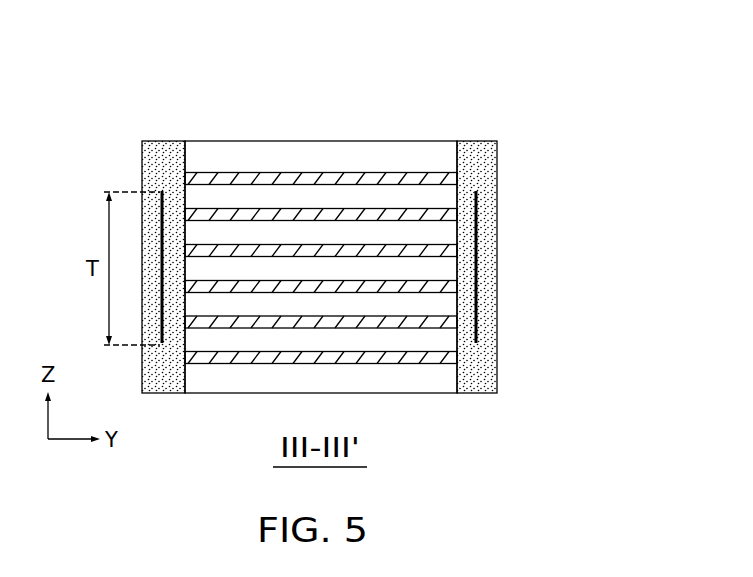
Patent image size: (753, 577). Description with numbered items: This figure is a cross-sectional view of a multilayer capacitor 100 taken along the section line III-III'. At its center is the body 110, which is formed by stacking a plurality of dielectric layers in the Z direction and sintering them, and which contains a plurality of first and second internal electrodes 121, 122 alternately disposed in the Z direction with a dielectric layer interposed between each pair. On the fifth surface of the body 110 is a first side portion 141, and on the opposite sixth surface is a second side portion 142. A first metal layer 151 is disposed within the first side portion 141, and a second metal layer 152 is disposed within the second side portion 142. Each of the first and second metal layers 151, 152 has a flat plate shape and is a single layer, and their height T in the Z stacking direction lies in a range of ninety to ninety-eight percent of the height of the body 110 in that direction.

The multilayer capacitor 100 is at (320, 210).
The body 110 is at (230, 141).
The first internal electrode 121 is at (317, 180).
The second internal electrode 122 is at (375, 216).
The first side portion 141 is at (166, 163).
The second side portion 142 is at (475, 163).
The first metal layer 151 is at (160, 207).
The second metal layer 152 is at (496, 205).